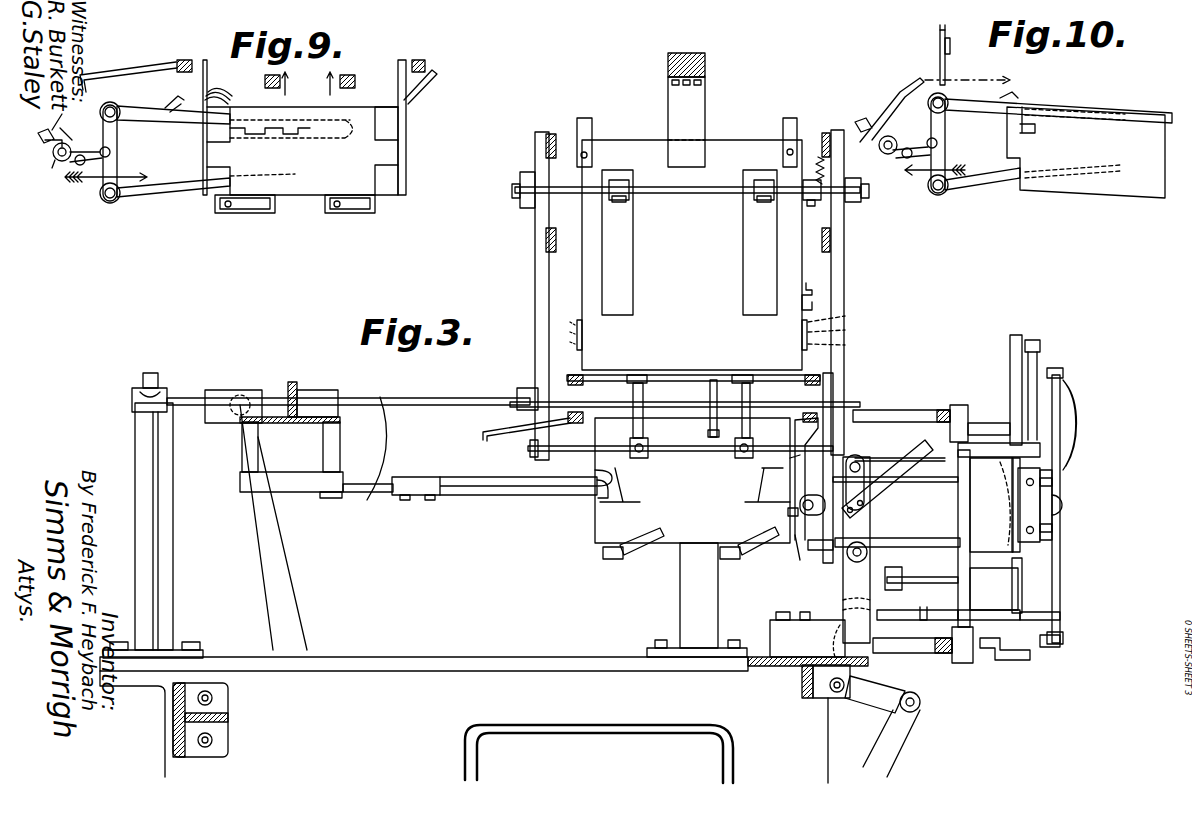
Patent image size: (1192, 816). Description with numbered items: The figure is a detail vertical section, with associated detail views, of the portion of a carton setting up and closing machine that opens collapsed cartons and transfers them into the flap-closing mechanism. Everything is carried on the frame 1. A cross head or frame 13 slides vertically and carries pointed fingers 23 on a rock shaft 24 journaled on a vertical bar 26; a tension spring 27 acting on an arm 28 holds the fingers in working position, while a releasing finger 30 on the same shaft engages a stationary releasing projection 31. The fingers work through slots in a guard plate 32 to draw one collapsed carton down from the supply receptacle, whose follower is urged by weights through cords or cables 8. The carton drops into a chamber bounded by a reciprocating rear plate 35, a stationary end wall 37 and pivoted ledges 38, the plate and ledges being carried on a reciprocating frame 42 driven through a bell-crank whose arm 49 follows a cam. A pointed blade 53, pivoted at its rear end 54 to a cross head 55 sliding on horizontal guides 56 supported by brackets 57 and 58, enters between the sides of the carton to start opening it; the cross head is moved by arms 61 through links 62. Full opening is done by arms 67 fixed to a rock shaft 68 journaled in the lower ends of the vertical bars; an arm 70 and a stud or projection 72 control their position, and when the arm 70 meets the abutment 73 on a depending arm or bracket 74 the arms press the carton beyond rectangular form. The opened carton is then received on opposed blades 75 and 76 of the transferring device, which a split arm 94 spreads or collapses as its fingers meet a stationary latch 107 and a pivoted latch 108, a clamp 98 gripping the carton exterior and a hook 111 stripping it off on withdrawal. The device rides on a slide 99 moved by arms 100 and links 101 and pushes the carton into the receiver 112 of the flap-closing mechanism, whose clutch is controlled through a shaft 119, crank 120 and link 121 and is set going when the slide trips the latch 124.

In FIG. 3, the frame 1 is at (484, 720).
In FIG. 3, the cords or cables 8 is at (707, 333).
In FIG. 3, the cross head or frame 13 is at (548, 240).
In FIG. 3, the fingers 23 is at (626, 168).
In FIG. 3, the rock shaft 24 is at (701, 194).
In FIG. 3, the vertical bar 26 is at (540, 369).
In FIG. 3, the tension spring 27 is at (815, 160).
In FIG. 3, the arm 28 is at (848, 202).
In FIG. 3, the releasing finger 30 is at (808, 206).
In FIG. 3, the releasing projection 31 is at (816, 272).
In FIG. 3, the guard plate 32 is at (689, 211).
In FIG. 9, the rear plate 35 is at (300, 126).
In FIG. 3, the rear plate 35 is at (595, 525).
In FIG. 9, the end wall 37 is at (404, 145).
In FIG. 3, the end wall 37 is at (797, 545).
In FIG. 9, the ledges 38 is at (255, 208).
In FIG. 3, the ledges 38 is at (645, 556).
In FIG. 9, the frame 42 is at (186, 62).
In FIG. 3, the frame 42 is at (566, 420).
In FIG. 3, the arm 49 is at (860, 570).
In FIG. 9, the blade 53 is at (203, 138).
In FIG. 3, the blade 53 is at (505, 496).
In FIG. 3, the rear end 54 is at (243, 494).
In FIG. 3, the cross head 55 is at (272, 427).
In FIG. 3, the horizontal guides 56 is at (346, 492).
In FIG. 3, the bracket 57 is at (135, 567).
In FIG. 3, the bracket 58 is at (690, 600).
In FIG. 3, the arms 61 is at (286, 577).
In FIG. 9, the links 62 is at (266, 86).
In FIG. 9, the arms 67 is at (355, 87).
In FIG. 3, the arms 67 is at (648, 381).
In FIG. 3, the rock shaft 68 is at (680, 471).
In FIG. 3, the arm 70 is at (866, 458).
In FIG. 3, the stud or projection 72 is at (880, 418).
In FIG. 3, the abutment 73 is at (829, 563).
In FIG. 3, the depending arm or bracket 74 is at (820, 550).
In FIG. 9, the blade 75 is at (165, 149).
In FIG. 3, the blade 75 is at (900, 455).
In FIG. 9, the blade 76 is at (182, 194).
In FIG. 10, the blade 76 is at (988, 117).
In FIG. 3, the blade 76 is at (900, 548).
In FIG. 9, the arm 94 is at (70, 140).
In FIG. 10, the arm 94 is at (892, 118).
In FIG. 3, the arm 94 is at (798, 463).
In FIG. 9, the clamp 98 is at (180, 90).
In FIG. 10, the clamp 98 is at (1020, 98).
In FIG. 3, the clamp 98 is at (935, 450).
In FIG. 3, the slide 99 is at (805, 681).
In FIG. 3, the arms 100 is at (895, 755).
In FIG. 3, the links 101 is at (870, 702).
In FIG. 9, the latch 107 is at (128, 69).
In FIG. 3, the latch 107 is at (512, 418).
In FIG. 10, the latch 108 is at (946, 65).
In FIG. 3, the latch 108 is at (710, 424).
In FIG. 10, the hook 111 is at (1056, 125).
In FIG. 3, the hook 111 is at (896, 487).
In FIG. 3, the receiver 112 is at (960, 518).
In FIG. 3, the shaft 119 is at (952, 578).
In FIG. 3, the crank 120 is at (952, 634).
In FIG. 3, the link 121 is at (950, 592).
In FIG. 3, the latch 124 is at (845, 604).